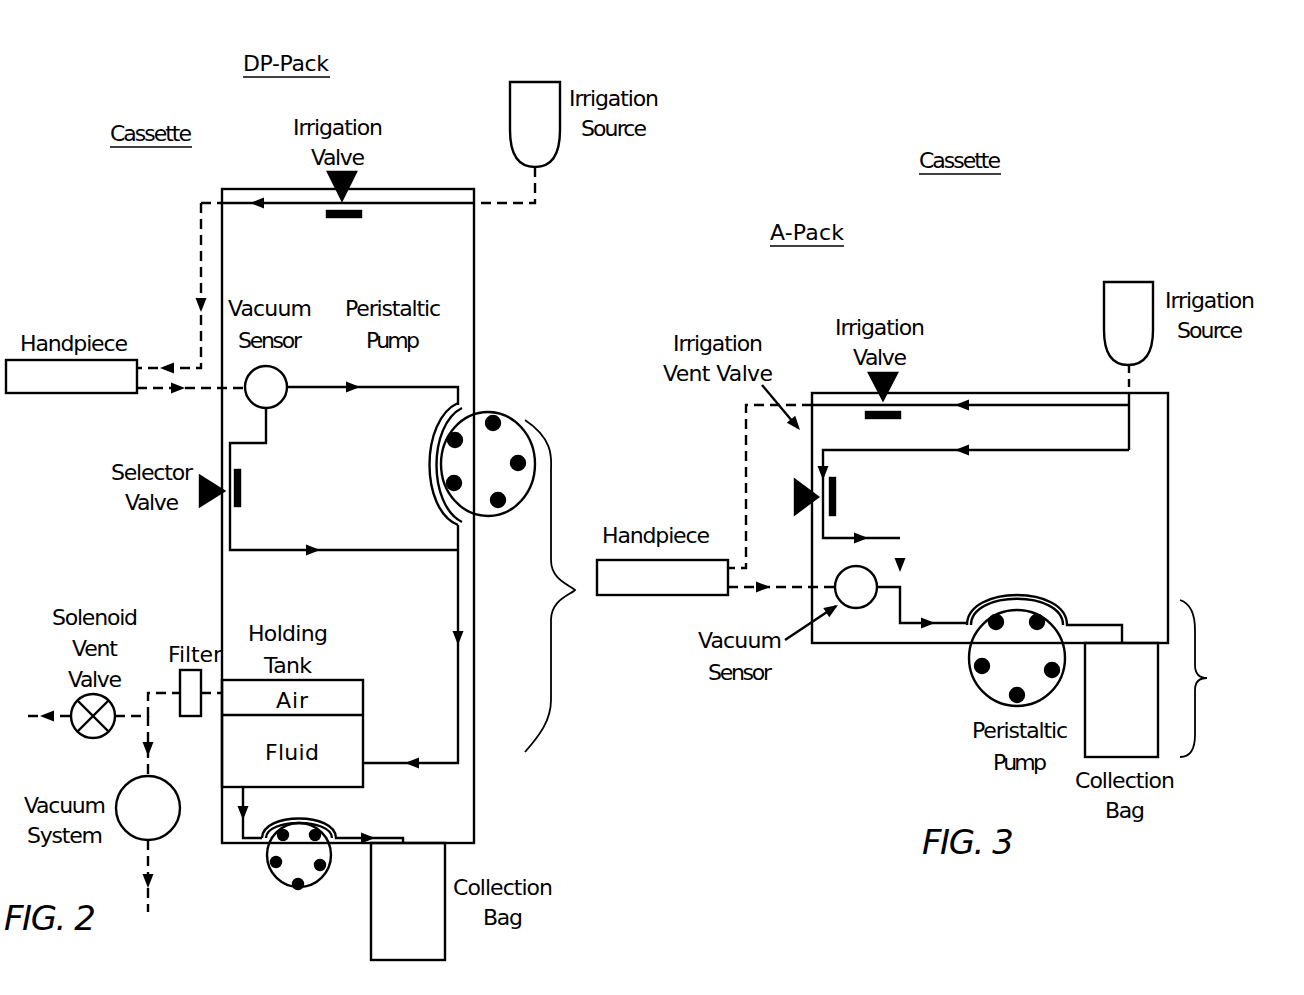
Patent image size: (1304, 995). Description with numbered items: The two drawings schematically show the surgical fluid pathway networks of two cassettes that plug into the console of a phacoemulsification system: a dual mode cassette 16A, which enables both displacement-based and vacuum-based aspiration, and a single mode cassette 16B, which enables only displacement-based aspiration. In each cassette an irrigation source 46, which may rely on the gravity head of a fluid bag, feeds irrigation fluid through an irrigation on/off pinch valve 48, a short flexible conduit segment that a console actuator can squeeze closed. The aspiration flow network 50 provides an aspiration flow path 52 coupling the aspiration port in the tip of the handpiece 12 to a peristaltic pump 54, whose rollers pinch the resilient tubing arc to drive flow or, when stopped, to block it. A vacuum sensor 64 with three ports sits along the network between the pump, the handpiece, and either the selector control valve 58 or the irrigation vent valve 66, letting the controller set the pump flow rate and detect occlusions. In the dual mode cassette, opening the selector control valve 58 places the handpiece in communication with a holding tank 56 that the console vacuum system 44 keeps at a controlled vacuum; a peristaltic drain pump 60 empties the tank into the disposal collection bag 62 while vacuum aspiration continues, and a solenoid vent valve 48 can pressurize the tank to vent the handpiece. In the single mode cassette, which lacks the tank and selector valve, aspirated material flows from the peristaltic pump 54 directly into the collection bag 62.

In FIG. 2, the handpiece 12 is at (75, 395).
In FIG. 3, the handpiece 12 is at (672, 595).
In FIG. 2, the dual mode cassette 16A is at (407, 90).
In FIG. 3, the single mode cassette 16B is at (980, 298).
In FIG. 2, the vacuum system 44 is at (128, 838).
In FIG. 2, the irrigation source 46 is at (545, 82).
In FIG. 3, the irrigation source 46 is at (1140, 282).
In FIG. 2, the irrigation on/off pinch valve 48 is at (352, 217).
In FIG. 3, the irrigation on/off pinch valve 48 is at (888, 418).
In FIG. 2, the aspiration flow network 50 is at (575, 590).
In FIG. 3, the aspiration flow network 50 is at (1209, 678).
In FIG. 2, the aspiration flow path 52 is at (235, 390).
In FIG. 3, the aspiration flow path 52 is at (822, 587).
In FIG. 2, the peristaltic pump 54 is at (496, 410).
In FIG. 3, the peristaltic pump 54 is at (1020, 598).
In FIG. 2, the holding tank 56 is at (350, 680).
In FIG. 2, the selector control valve 58 is at (241, 488).
In FIG. 2, the peristaltic drain pump 60 is at (275, 888).
In FIG. 2, the collection bag 62 is at (370, 913).
In FIG. 3, the collection bag 62 is at (1083, 757).
In FIG. 2, the vacuum sensor 64 is at (283, 373).
In FIG. 3, the vacuum sensor 64 is at (857, 608).
In FIG. 3, the irrigation vent valve 66 is at (836, 498).